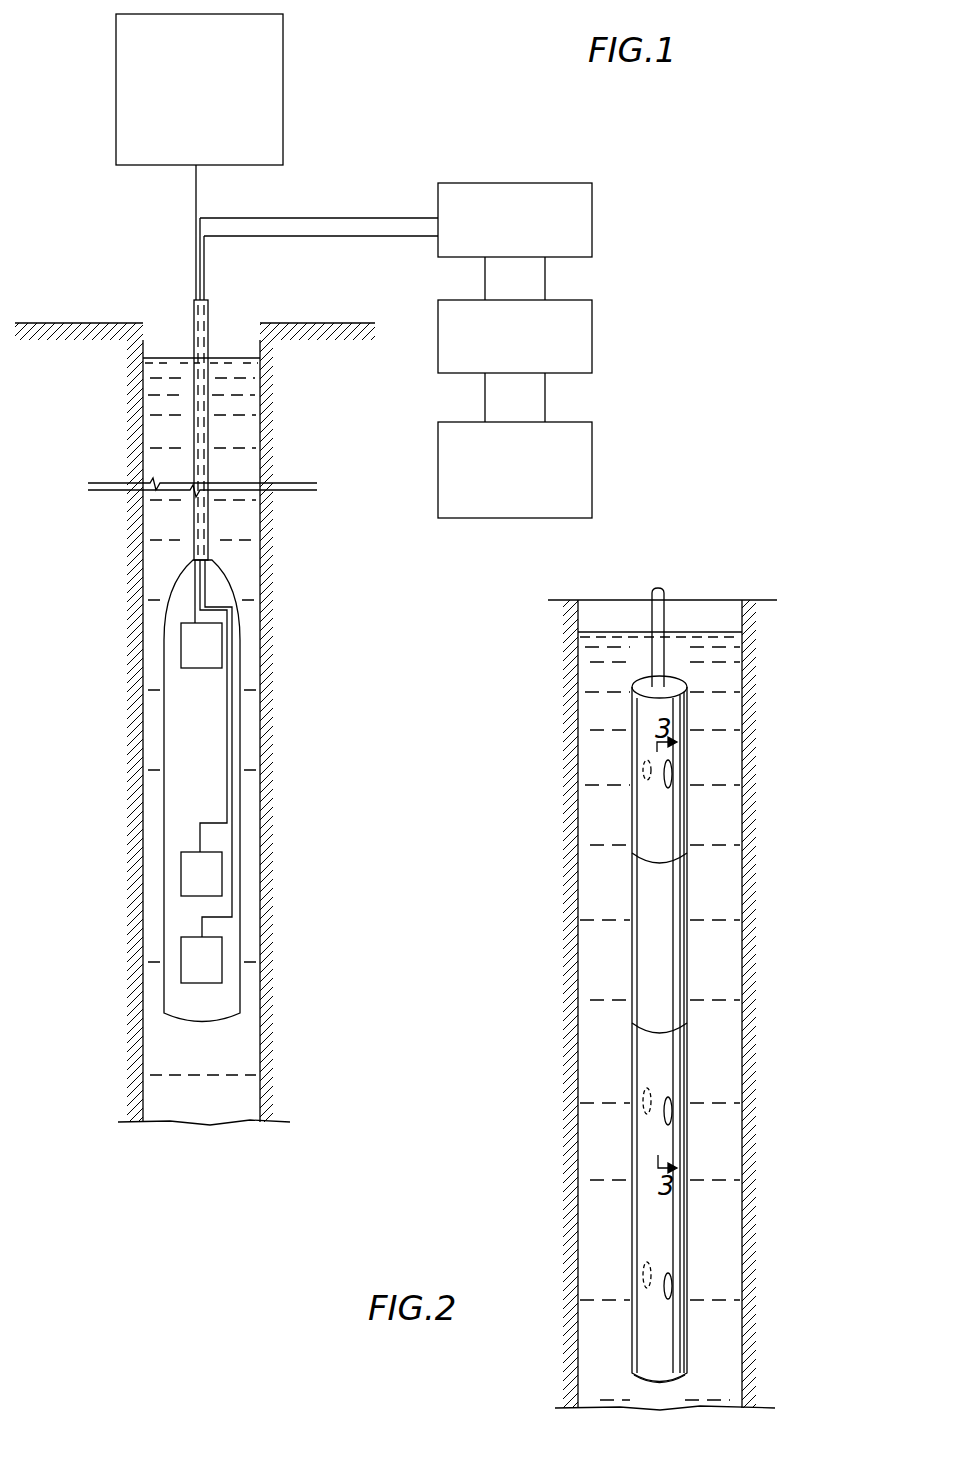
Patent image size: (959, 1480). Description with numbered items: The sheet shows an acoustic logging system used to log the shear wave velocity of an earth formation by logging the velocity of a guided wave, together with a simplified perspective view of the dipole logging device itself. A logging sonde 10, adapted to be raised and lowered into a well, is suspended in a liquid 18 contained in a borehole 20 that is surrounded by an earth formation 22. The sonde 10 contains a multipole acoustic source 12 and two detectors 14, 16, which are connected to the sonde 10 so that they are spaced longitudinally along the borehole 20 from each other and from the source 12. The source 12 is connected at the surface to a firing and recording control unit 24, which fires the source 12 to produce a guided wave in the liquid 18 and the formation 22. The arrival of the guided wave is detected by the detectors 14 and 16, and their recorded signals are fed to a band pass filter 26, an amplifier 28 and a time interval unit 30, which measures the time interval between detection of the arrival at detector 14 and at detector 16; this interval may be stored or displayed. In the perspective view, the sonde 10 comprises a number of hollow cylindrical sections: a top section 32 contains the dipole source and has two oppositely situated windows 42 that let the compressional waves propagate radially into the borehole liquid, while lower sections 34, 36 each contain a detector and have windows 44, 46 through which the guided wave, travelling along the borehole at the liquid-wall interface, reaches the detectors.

In FIG. 1, the logging sonde 10 is at (170, 583).
In FIG. 2, the logging sonde 10 is at (698, 675).
In FIG. 1, the multipole acoustic source 12 is at (181, 653).
In FIG. 1, the detector 14 is at (181, 877).
In FIG. 1, the detector 16 is at (181, 963).
In FIG. 1, the liquid 18 is at (244, 401).
In FIG. 2, the liquid 18 is at (728, 705).
In FIG. 1, the borehole 20 is at (164, 330).
In FIG. 2, the borehole 20 is at (719, 592).
In FIG. 1, the earth formation 22 is at (309, 569).
In FIG. 2, the earth formation 22 is at (791, 884).
In FIG. 1, the firing and recording control unit 24 is at (283, 80).
In FIG. 1, the band pass filter 26 is at (595, 212).
In FIG. 1, the amplifier 28 is at (595, 334).
In FIG. 1, the time interval unit 30 is at (595, 475).
In FIG. 2, the top section 32 is at (653, 759).
In FIG. 2, the section 34 is at (657, 1089).
In FIG. 2, the section 36 is at (657, 1261).
In FIG. 2, the windows 42 is at (653, 763).
In FIG. 2, the windows 44 is at (652, 1093).
In FIG. 2, the windows 46 is at (652, 1268).